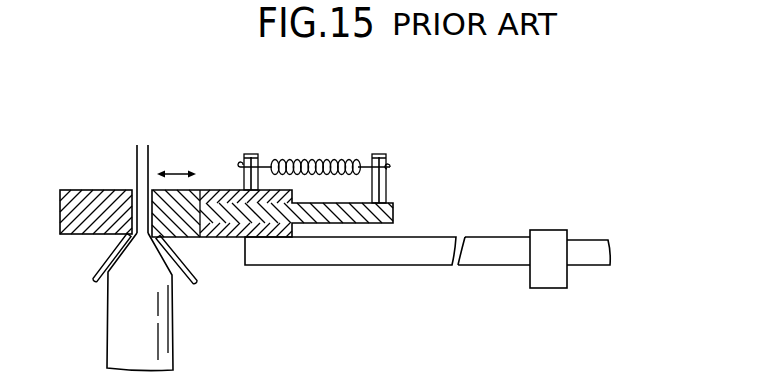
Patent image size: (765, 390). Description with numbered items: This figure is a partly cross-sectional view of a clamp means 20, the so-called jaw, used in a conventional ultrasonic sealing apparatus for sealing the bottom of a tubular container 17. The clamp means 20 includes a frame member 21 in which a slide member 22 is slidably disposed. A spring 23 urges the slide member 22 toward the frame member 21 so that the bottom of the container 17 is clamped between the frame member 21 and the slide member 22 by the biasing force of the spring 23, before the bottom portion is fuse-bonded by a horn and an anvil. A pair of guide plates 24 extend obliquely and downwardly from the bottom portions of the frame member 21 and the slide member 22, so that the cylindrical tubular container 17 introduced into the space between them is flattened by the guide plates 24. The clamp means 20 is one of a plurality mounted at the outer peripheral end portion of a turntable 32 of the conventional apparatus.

The container 17 is at (107, 343).
The clamp means 20 is at (71, 184).
The frame member 21 is at (110, 190).
The slide member 22 is at (192, 200).
The spring 23 is at (318, 160).
The guide plates 24 is at (88, 272).
The turntable 32 is at (492, 238).